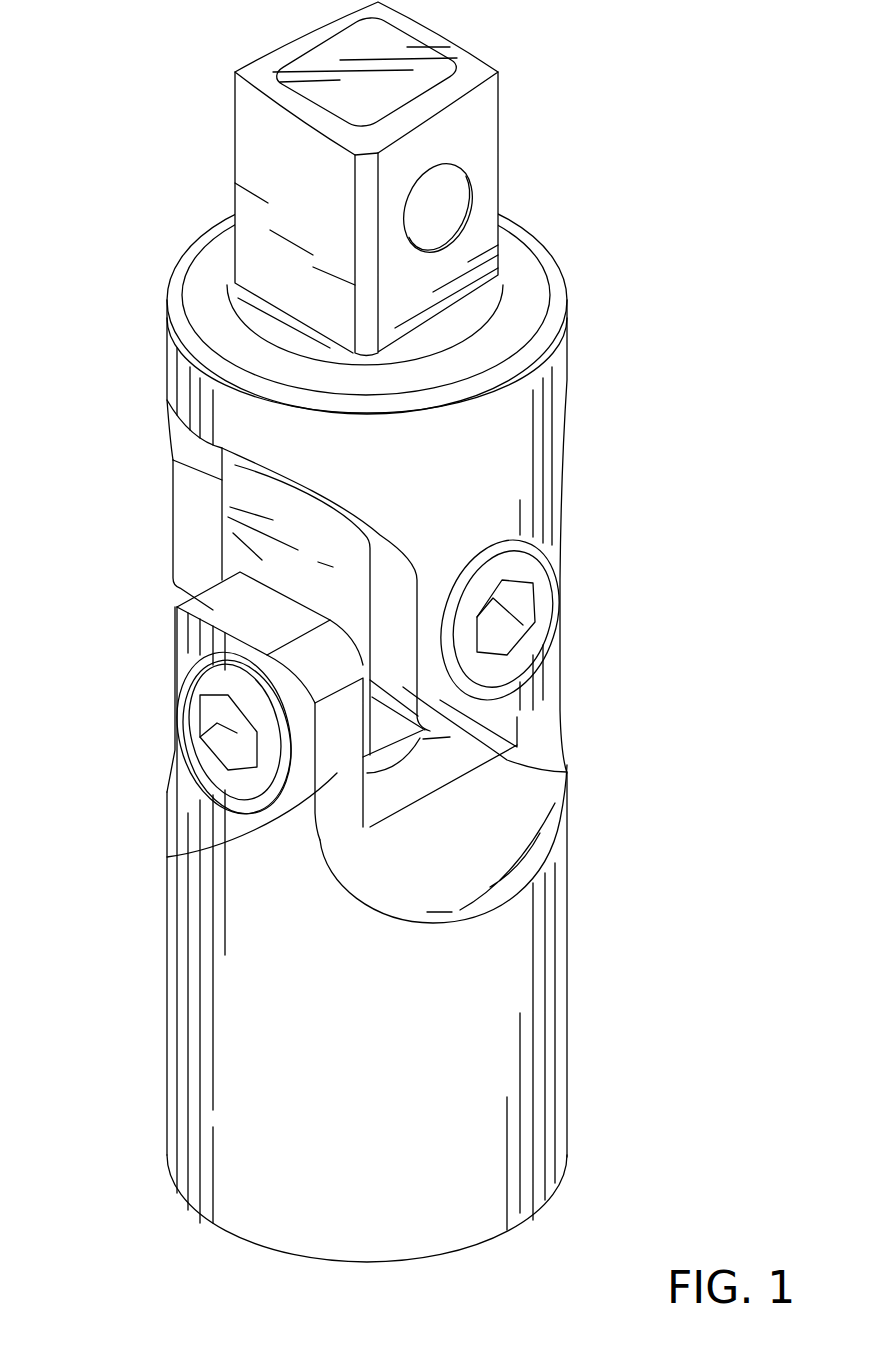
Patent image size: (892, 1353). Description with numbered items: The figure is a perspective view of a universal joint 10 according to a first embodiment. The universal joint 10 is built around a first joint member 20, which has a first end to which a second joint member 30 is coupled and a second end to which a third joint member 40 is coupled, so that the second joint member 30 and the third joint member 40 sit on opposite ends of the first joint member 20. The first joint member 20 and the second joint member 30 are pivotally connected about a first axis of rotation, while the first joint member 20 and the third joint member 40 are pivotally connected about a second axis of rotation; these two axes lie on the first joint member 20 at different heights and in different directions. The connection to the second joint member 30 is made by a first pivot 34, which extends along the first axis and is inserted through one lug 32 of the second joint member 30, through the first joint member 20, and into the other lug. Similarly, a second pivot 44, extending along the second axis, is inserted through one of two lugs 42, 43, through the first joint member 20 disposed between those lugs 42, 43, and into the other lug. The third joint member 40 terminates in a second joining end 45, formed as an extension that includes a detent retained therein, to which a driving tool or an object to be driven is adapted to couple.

The universal joint 10 is at (123, 397).
The first joint member 20 is at (258, 540).
The second joint member 30 is at (518, 997).
The lug 32 is at (262, 832).
The first pivot 34 is at (233, 730).
The third joint member 40 is at (535, 400).
The lug 42 is at (500, 755).
The lug 43 is at (193, 497).
The second pivot 44 is at (503, 615).
The second joining end 45 is at (262, 138).